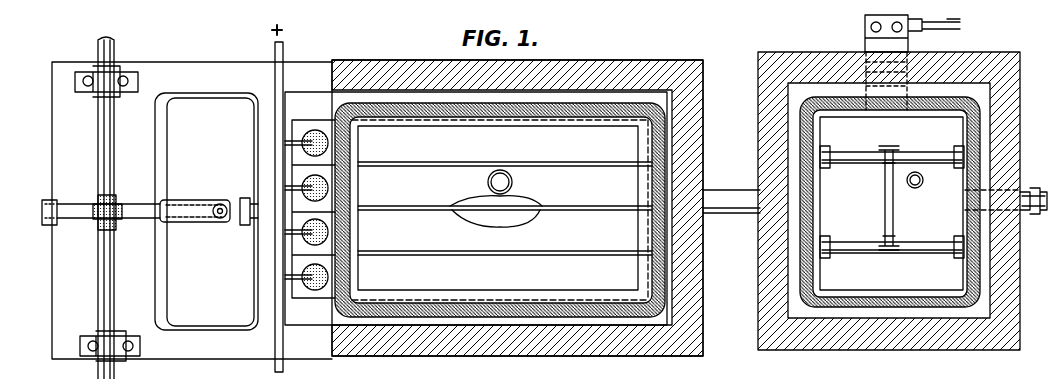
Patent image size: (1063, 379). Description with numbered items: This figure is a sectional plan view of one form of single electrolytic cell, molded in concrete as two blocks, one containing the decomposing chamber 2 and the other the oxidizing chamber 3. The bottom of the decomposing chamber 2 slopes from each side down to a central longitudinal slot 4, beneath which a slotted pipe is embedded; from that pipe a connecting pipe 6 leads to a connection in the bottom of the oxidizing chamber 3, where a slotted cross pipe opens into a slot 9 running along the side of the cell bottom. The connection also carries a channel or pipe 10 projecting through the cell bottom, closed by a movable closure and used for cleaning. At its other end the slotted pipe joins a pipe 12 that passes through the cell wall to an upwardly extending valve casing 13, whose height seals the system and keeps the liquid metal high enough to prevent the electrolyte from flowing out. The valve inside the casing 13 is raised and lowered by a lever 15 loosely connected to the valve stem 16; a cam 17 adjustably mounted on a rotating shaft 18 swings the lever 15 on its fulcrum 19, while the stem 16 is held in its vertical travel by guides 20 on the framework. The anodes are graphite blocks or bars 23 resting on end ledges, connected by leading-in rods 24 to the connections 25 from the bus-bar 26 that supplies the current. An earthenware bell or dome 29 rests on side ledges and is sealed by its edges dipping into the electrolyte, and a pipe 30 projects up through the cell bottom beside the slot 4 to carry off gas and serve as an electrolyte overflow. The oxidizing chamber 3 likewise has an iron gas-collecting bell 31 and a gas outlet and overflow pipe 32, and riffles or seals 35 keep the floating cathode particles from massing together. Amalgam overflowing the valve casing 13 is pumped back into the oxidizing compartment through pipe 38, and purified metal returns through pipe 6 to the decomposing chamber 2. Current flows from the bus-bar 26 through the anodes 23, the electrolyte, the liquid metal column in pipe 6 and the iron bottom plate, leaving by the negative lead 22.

The decomposing chamber 2 is at (703, 135).
The oxidizing chamber 3 is at (1008, 128).
The central longitudinal slot 4 is at (496, 212).
The connecting pipe 6 is at (730, 190).
The slot 9 is at (816, 210).
The channel or pipe 10 is at (1032, 214).
The pipe 12 is at (248, 190).
The valve casing 13 is at (250, 225).
The lever 15 is at (140, 218).
The stem 16 is at (220, 204).
The cam 17 is at (116, 200).
The rotating shaft 18 is at (120, 165).
The fulcrum 19 is at (45, 225).
The guide 20 is at (200, 222).
The negative lead 22 is at (893, 62).
The anodes 23 is at (505, 196).
The leading-in rods 24 is at (318, 137).
The connections 25 is at (300, 143).
The bus-bar 26 is at (283, 52).
The bell or dome 29 is at (455, 312).
The pipe 30 is at (512, 182).
The gas-collecting bell 31 is at (930, 305).
The gas outlet and overflow pipe 32 is at (913, 188).
The riffles or seals 35 is at (862, 146).
The pipe 38 is at (1034, 188).